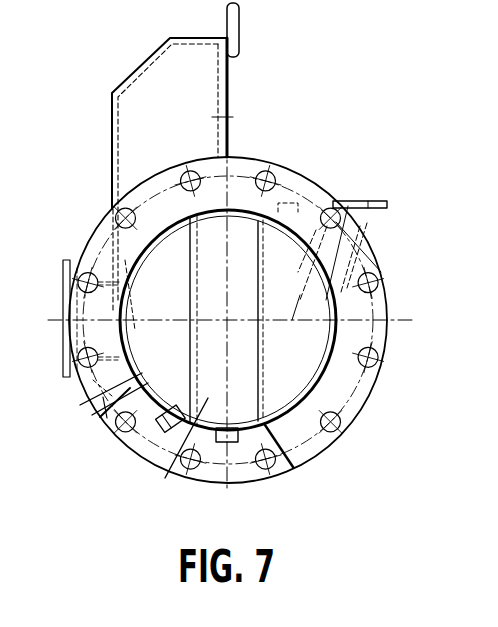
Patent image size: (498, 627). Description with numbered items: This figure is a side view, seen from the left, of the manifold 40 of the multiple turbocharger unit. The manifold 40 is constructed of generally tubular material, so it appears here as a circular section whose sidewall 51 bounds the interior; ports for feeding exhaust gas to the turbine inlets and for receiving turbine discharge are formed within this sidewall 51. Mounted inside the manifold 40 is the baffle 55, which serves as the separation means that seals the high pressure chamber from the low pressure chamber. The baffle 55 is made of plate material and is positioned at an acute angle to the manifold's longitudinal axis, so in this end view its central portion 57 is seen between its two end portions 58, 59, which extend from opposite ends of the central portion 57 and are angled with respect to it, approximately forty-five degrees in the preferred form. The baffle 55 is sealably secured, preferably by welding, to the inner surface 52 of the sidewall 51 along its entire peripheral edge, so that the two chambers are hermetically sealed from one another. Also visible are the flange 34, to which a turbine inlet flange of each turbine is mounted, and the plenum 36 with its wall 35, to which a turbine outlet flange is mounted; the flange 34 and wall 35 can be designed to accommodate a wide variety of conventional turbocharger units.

The flange 34 is at (382, 201).
The wall 35 is at (229, 70).
The plenum 36 is at (160, 97).
The manifold 40 is at (93, 213).
The sidewall 51 is at (92, 400).
The inner surface 52 is at (93, 410).
The baffle 55 is at (166, 478).
The central portion 57 is at (222, 309).
The end portion 58 is at (169, 309).
The end portion 59 is at (293, 309).